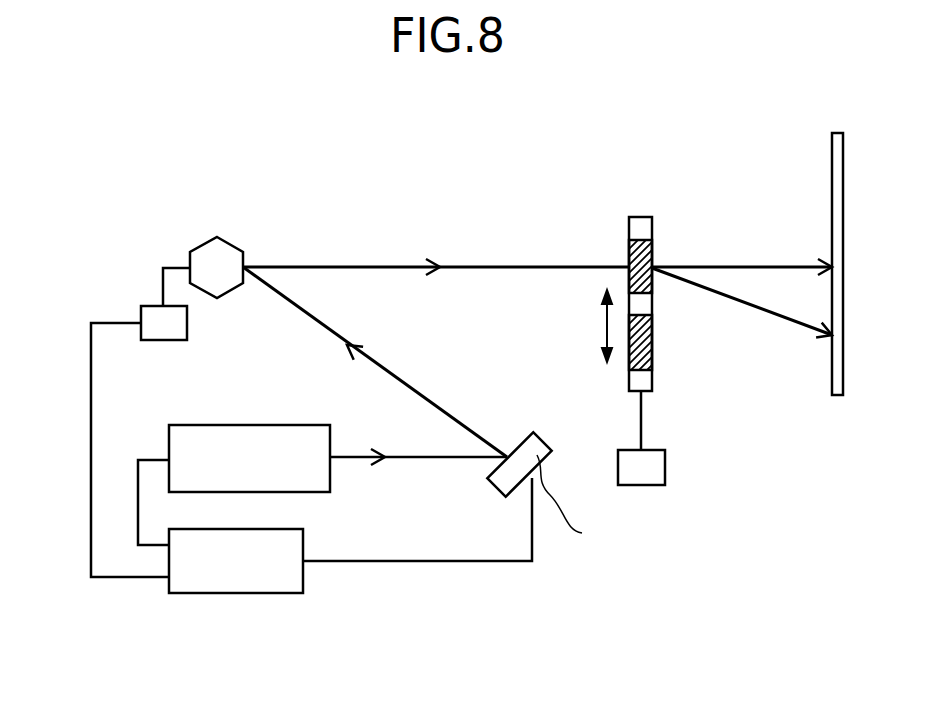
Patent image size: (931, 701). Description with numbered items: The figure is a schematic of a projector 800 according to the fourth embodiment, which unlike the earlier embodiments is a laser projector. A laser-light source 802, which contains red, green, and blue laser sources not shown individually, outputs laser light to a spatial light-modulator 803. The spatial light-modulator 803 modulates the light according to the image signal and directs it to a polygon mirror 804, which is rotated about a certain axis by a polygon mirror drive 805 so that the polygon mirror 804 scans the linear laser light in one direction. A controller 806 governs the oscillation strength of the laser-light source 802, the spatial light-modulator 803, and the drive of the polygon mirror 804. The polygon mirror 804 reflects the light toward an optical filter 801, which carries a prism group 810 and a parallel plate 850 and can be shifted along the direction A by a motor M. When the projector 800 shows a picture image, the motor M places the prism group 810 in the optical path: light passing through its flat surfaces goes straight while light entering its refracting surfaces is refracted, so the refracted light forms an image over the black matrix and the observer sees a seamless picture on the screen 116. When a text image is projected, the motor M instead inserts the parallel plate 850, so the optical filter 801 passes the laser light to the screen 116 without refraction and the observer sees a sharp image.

The projector 800 is at (516, 144).
The optical filter 801 is at (677, 271).
The laser-light source 802 is at (193, 425).
The spatial light-modulator 803 is at (517, 441).
The polygon mirror 804 is at (232, 244).
The polygon mirror drive 805 is at (155, 306).
The controller 806 is at (237, 593).
The prism group 810 is at (652, 250).
The parallel plate 850 is at (652, 345).
The screen 116 is at (832, 160).
The direction A is at (604, 325).
The motor M is at (665, 468).